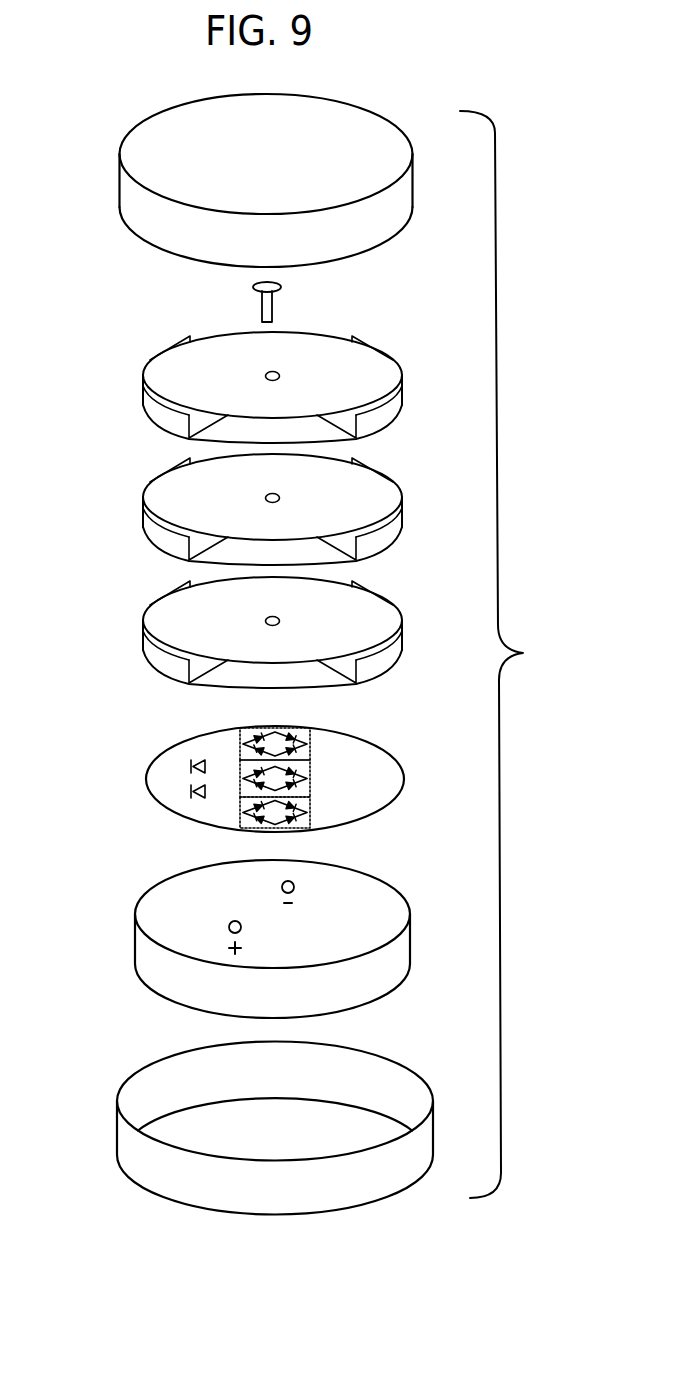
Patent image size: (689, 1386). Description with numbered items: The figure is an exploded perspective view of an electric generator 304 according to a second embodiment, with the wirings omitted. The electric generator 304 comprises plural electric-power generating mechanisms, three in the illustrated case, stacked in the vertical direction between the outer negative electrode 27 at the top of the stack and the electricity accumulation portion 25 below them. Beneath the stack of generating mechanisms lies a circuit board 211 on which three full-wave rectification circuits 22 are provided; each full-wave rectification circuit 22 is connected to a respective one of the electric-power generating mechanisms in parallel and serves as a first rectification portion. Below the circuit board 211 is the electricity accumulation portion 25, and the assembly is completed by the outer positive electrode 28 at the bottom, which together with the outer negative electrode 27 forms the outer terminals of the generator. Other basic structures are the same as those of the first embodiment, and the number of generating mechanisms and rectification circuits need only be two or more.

The outer negative electrode 27 is at (118, 184).
The full-wave rectification circuit 22 is at (310, 736).
The circuit board 211 is at (397, 800).
The electricity accumulation portion 25 is at (410, 950).
The outer positive electrode 28 is at (135, 1182).
The electric generator 304 is at (523, 653).